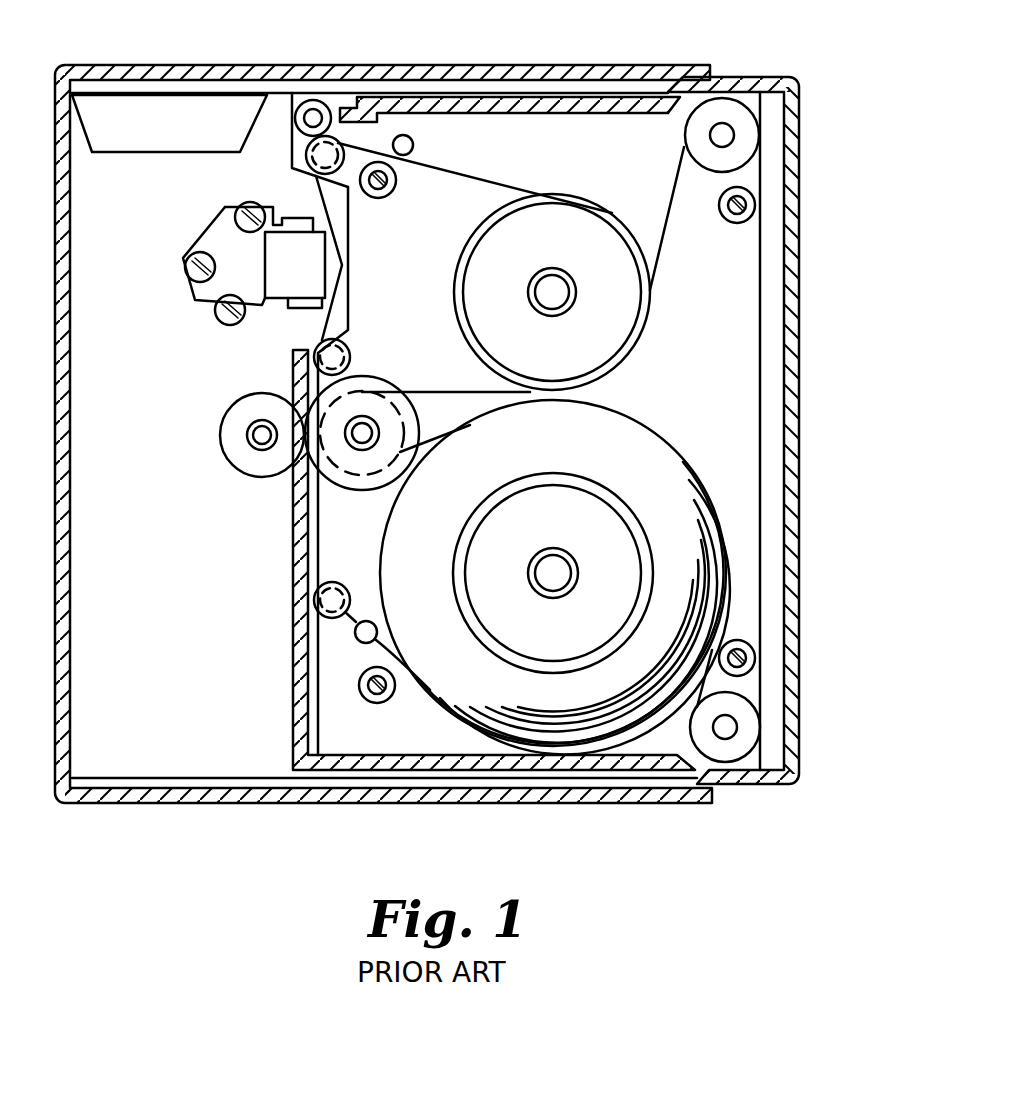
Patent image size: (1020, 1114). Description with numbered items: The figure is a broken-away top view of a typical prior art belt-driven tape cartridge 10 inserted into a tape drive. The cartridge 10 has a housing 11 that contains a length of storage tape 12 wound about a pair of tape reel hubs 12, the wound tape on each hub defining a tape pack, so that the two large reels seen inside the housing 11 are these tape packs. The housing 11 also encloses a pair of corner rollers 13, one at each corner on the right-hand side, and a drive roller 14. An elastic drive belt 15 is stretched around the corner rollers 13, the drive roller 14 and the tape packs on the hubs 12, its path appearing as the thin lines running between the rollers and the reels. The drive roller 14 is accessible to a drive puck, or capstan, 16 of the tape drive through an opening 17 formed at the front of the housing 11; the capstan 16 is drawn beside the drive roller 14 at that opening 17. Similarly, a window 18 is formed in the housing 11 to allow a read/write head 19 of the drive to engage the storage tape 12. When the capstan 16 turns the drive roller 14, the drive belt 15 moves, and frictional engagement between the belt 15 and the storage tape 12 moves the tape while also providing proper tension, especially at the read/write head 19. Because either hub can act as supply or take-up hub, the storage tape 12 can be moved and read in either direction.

The belt-driven tape cartridge 10 is at (800, 73).
The housing 11 is at (788, 199).
The storage tape 12 is at (480, 168).
The corner rollers 13 is at (683, 133).
The drive roller 14 is at (380, 373).
The elastic drive belt 15 is at (658, 273).
The drive puck 16 is at (237, 425).
The opening 17 is at (296, 481).
The window 18 is at (297, 172).
The read/write head 19 is at (290, 288).